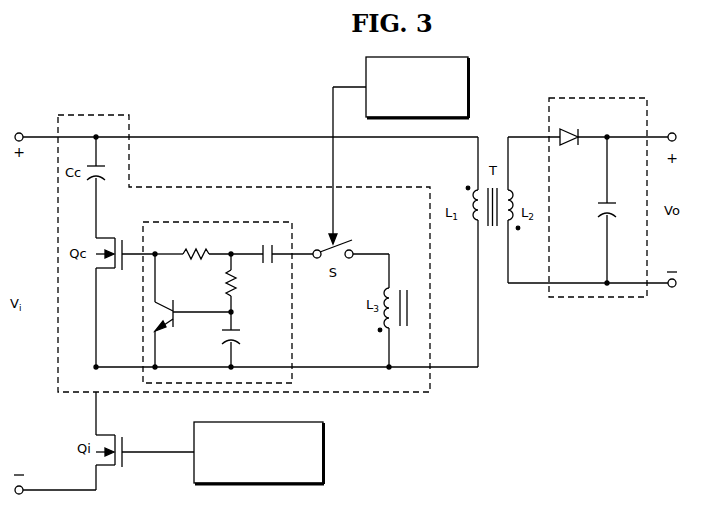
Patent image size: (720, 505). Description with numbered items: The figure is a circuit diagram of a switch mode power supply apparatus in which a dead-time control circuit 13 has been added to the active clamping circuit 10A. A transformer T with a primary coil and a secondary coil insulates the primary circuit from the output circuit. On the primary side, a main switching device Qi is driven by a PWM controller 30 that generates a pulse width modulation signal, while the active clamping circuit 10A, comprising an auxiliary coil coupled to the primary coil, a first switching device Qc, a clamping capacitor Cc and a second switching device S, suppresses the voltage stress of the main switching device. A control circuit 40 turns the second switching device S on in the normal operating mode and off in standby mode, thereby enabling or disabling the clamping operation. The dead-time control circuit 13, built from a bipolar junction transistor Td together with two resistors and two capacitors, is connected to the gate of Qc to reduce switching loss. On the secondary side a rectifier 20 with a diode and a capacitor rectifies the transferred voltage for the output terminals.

The active clamping circuit 10A is at (84, 115).
The dead-time control circuit 13 is at (232, 222).
The rectifier 20 is at (590, 98).
The PWM controller 30 is at (287, 422).
The control circuit 40 is at (450, 57).